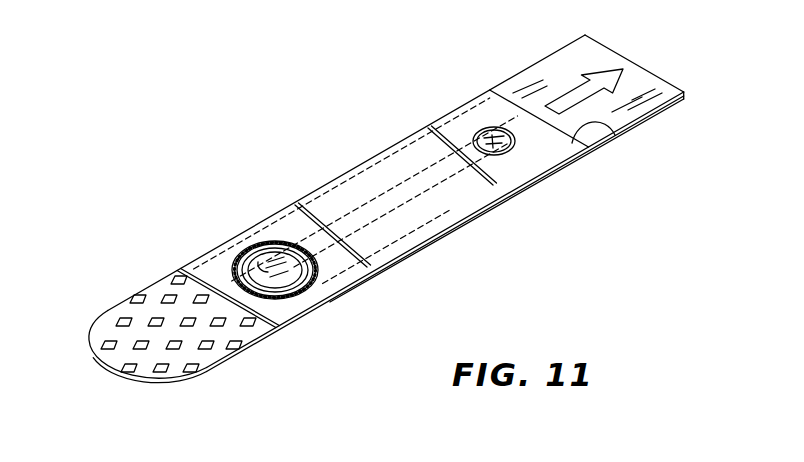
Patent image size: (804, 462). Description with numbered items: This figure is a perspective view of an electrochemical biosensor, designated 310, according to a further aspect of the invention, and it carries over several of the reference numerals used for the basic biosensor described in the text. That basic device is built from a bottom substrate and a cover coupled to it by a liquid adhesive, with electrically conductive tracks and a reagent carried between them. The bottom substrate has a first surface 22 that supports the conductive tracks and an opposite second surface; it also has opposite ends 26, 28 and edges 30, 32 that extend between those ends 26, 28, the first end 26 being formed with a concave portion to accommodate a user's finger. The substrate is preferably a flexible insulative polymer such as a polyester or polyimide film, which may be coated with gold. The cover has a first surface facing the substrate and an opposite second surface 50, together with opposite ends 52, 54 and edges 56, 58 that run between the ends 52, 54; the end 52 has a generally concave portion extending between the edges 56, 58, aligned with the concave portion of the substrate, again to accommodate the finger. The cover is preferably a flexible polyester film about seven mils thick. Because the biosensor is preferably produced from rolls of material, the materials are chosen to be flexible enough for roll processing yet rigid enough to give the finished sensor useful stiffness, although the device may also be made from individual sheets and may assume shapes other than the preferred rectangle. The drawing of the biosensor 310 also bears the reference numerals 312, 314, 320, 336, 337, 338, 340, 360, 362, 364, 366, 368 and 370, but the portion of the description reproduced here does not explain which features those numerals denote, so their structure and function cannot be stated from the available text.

The absorbent article 310 is at (213, 109).
The first surface 22 is at (245, 262).
The first end 26 is at (100, 373).
The end 28 is at (600, 44).
The edge 30 is at (213, 373).
The edge 32 is at (123, 305).
The second surface 50 is at (496, 186).
The end 52 is at (270, 333).
The end 54 is at (614, 136).
The edge 56 is at (352, 288).
The edge 58 is at (252, 228).
The top layer 312 is at (355, 162).
The release flap 314 is at (526, 62).
The electrode tab 320 is at (508, 157).
The fold line 336 is at (557, 152).
The seal line 337 is at (238, 232).
The spacer layer 338 is at (340, 232).
The hidden reservoir 340 is at (380, 188).
The sensor pad 360 is at (273, 262).
The small port 362 is at (477, 122).
The lower edge 364 is at (318, 298).
The perforations 366 is at (108, 340).
The adhesive strips 368 is at (620, 78).
The hidden channel 370 is at (417, 176).